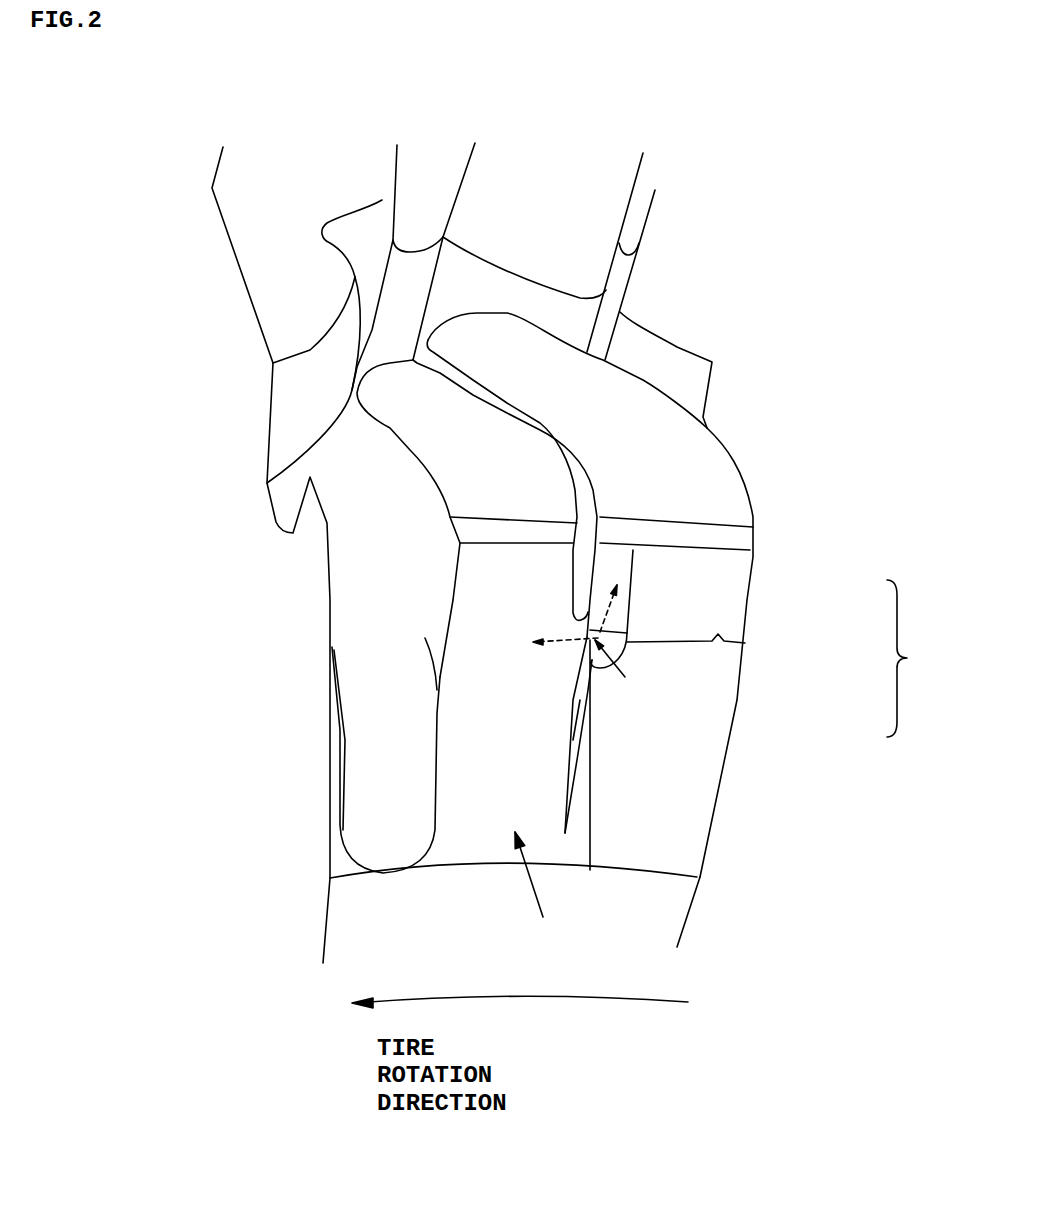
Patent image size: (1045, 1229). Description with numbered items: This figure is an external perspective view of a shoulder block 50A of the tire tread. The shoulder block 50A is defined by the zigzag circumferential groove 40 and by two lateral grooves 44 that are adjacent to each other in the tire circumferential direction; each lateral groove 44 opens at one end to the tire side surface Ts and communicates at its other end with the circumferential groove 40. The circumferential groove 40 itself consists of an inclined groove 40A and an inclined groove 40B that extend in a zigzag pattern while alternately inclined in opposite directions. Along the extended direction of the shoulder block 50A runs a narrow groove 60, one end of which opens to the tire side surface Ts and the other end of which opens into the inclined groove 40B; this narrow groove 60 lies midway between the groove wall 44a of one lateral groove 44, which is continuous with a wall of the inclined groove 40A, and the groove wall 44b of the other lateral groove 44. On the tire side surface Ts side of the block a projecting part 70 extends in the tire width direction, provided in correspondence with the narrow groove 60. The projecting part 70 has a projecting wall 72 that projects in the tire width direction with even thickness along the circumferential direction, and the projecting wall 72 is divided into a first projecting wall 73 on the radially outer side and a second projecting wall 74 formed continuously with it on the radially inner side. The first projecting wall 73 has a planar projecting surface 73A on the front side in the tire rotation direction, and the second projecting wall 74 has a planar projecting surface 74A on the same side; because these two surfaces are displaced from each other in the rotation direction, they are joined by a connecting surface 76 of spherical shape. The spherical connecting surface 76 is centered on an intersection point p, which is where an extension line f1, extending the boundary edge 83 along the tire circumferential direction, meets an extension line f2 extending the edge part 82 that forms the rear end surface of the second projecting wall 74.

The circumferential groove 40 is at (455, 313).
The inclined groove 40A is at (565, 327).
The inclined groove 40B is at (388, 342).
The shoulder block 50A is at (587, 393).
The narrow groove 60 is at (578, 483).
The lateral groove 44 is at (377, 642).
The groove wall 44a is at (410, 490).
The groove wall 44b is at (753, 570).
The projecting part 70 is at (690, 732).
The projecting wall 72 is at (917, 658).
The first projecting wall 73 is at (703, 587).
The second projecting wall 74 is at (703, 720).
The projecting surface 73A is at (620, 630).
The projecting surface 74A is at (578, 712).
The connecting surface 76 is at (583, 656).
The edge part 82 is at (585, 732).
The boundary edge 83 is at (745, 643).
The extension line f1 is at (549, 649).
The extension line f2 is at (609, 596).
The intersection point p is at (618, 667).
The tire side surface Ts is at (533, 888).